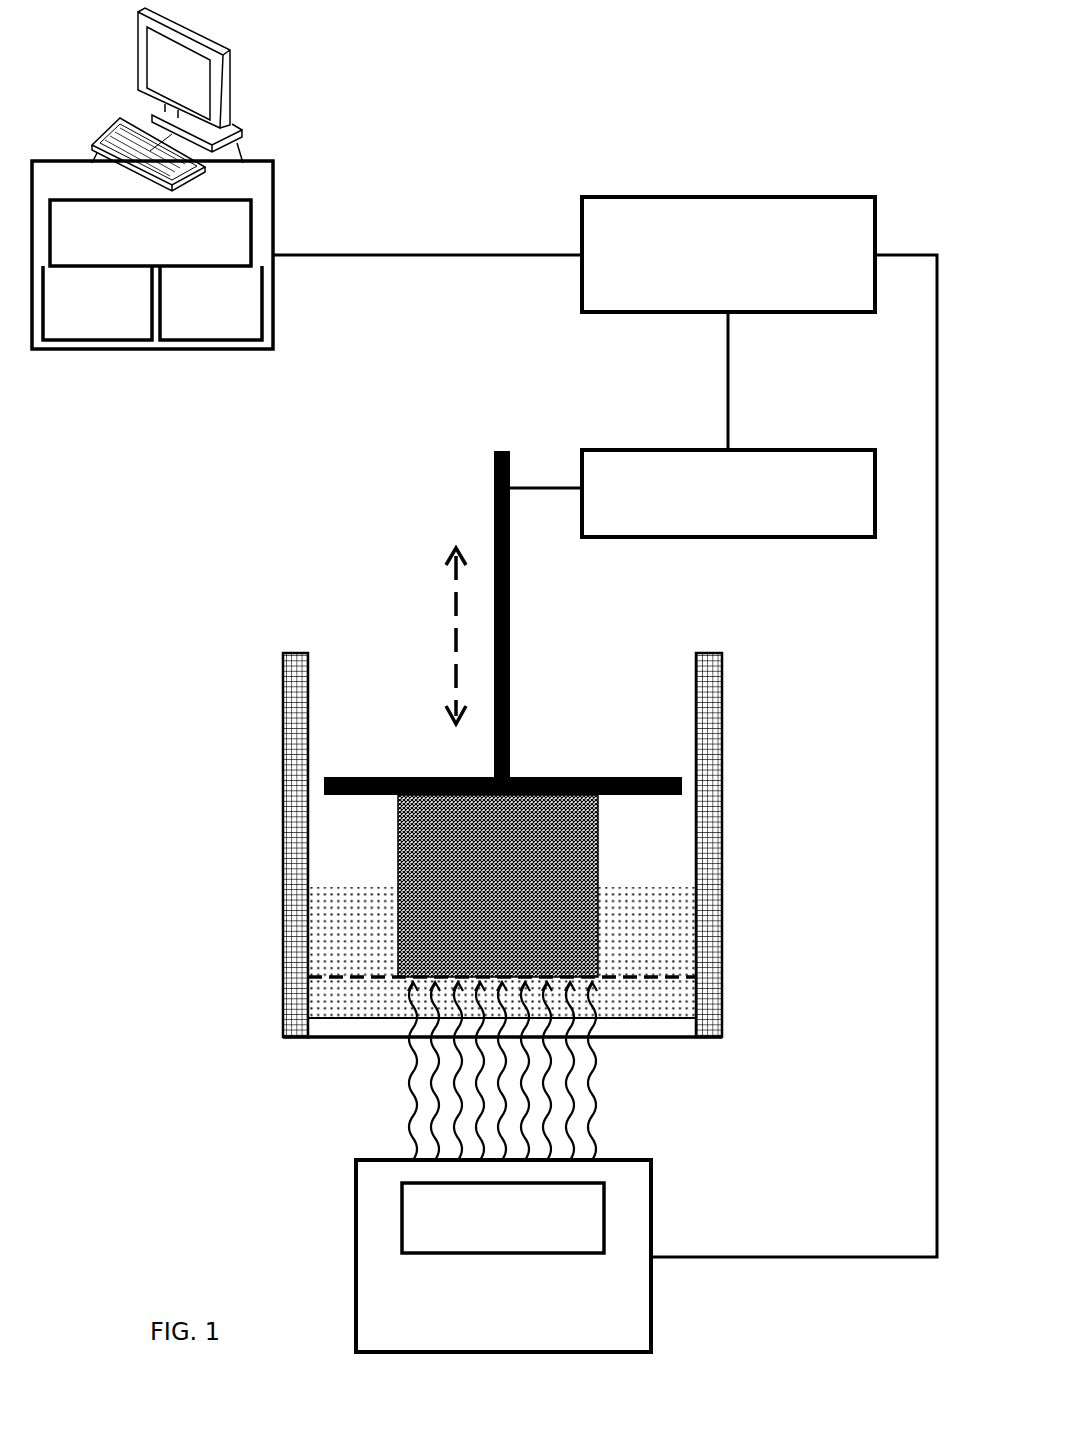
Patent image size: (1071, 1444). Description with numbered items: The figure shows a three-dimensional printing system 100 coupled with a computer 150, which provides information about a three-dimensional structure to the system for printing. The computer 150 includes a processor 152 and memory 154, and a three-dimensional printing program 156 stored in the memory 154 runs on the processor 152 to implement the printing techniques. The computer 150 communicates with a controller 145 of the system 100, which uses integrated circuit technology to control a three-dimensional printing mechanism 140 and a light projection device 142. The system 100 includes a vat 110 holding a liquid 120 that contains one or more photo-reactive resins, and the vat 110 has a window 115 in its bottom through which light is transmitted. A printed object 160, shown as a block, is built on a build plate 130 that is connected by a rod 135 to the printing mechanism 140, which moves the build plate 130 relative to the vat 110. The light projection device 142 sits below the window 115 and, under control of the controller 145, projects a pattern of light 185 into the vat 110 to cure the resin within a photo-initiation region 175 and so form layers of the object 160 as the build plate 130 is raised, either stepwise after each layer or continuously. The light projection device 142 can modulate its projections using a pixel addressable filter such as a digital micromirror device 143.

The 3D printing system 100 is at (838, 60).
The vat 110 is at (283, 692).
The window 115 is at (672, 1037).
The liquid 120 is at (648, 895).
The build plate 130 is at (578, 777).
The rod 135 is at (510, 633).
The 3D printing mechanism 140 is at (793, 450).
The light projection device 142 is at (554, 1250).
The digital micromirror device (DMD) 143 is at (520, 1242).
The controller 145 is at (832, 196).
The computer 150 is at (260, 193).
The processor 152 is at (116, 325).
The memory 154 is at (228, 325).
The 3D printing program 156 is at (167, 261).
The 3D printed object 160 is at (398, 818).
The photo-initiation region 175 is at (320, 993).
The light 185 is at (405, 1090).